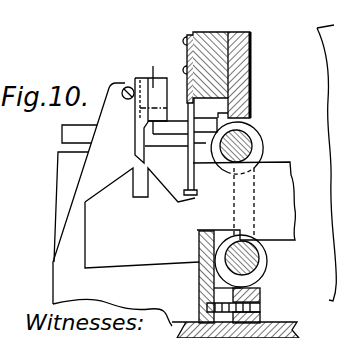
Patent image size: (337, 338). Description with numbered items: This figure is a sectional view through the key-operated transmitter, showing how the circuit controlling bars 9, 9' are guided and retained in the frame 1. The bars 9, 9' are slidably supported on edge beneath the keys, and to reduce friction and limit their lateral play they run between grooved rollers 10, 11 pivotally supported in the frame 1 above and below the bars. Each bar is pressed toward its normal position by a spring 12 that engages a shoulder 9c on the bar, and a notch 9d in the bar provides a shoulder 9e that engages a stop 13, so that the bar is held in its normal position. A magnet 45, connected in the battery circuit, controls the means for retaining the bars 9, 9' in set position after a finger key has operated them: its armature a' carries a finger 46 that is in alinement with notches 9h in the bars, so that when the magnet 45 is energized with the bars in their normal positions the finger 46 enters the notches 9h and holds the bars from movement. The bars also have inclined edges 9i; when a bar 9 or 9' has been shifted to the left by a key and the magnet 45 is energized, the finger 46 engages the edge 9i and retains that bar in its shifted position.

The frame 1 is at (252, 62).
The circuit controlling bar 9 is at (190, 157).
The circuit controlling bar 9' is at (212, 203).
The shoulder 9c is at (194, 176).
The notch 9d is at (196, 214).
The shoulder 9e is at (191, 256).
The notch or recess 9h is at (106, 209).
The inclined edge 9i is at (167, 217).
The grooved roller 10 is at (254, 138).
The grooved roller 11 is at (258, 265).
The spring 12 is at (187, 152).
The stop 13 is at (187, 275).
The magnet 45 is at (138, 83).
The finger 46 is at (135, 159).
The pointer a' is at (150, 65).